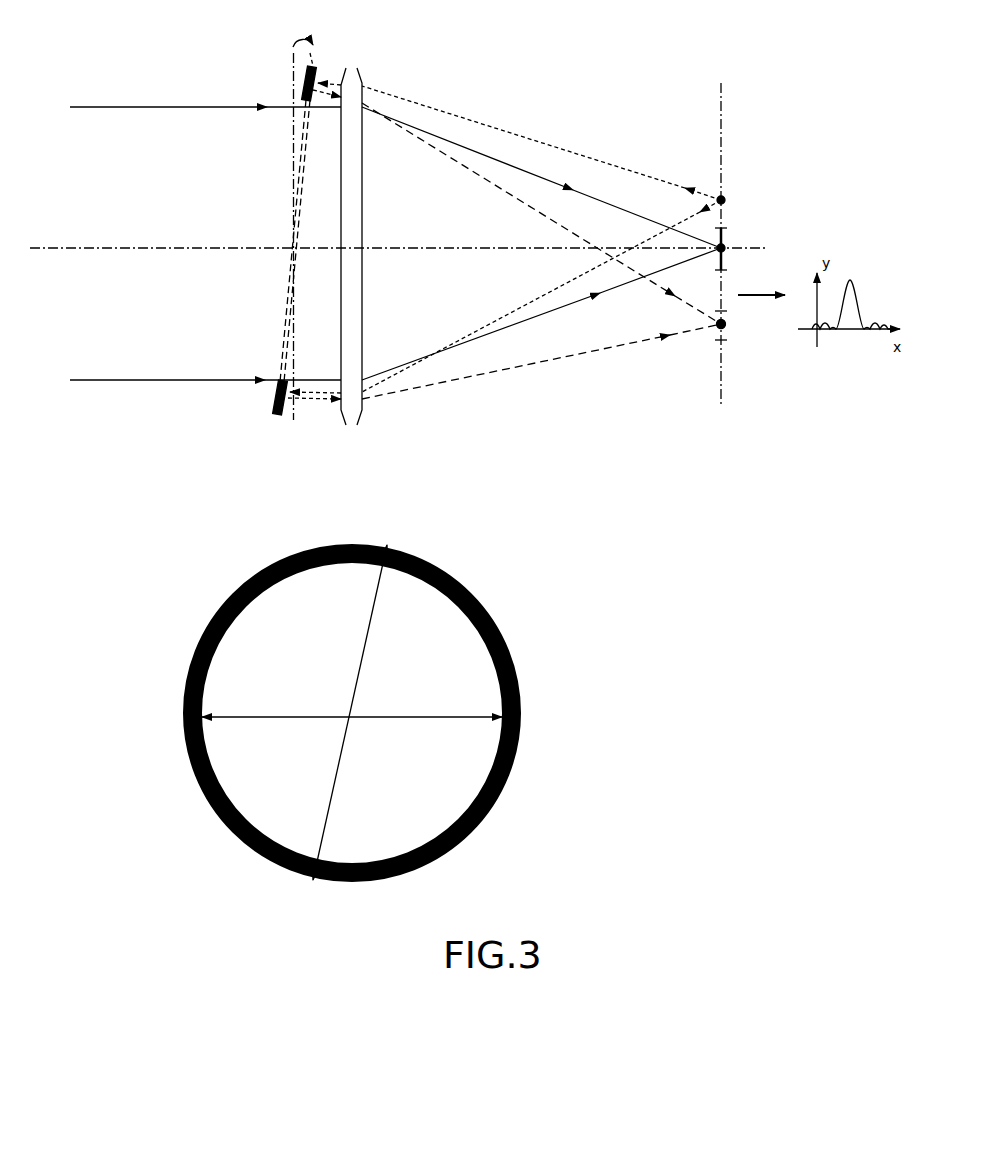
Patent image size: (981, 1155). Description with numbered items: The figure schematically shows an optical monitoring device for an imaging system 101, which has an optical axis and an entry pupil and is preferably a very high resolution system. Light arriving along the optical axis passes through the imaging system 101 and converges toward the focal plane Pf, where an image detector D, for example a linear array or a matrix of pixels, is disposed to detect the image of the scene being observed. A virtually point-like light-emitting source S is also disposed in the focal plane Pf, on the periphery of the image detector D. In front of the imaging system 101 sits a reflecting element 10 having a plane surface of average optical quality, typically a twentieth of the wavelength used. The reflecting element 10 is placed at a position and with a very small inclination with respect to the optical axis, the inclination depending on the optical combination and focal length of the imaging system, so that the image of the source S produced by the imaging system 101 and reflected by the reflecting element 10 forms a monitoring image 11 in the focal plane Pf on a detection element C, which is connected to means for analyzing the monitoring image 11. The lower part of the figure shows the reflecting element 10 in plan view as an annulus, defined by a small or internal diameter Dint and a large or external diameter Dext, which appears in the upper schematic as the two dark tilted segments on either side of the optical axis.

The reflecting element 10 is at (303, 90).
The imaging system 101 is at (362, 76).
The monitoring image 11 is at (719, 328).
The light-emitting source S is at (724, 199).
The image detector D is at (726, 247).
The detection element C is at (727, 326).
The focal plane Pf is at (722, 385).
The external diameter Dext is at (377, 610).
The internal diameter Dint is at (240, 718).